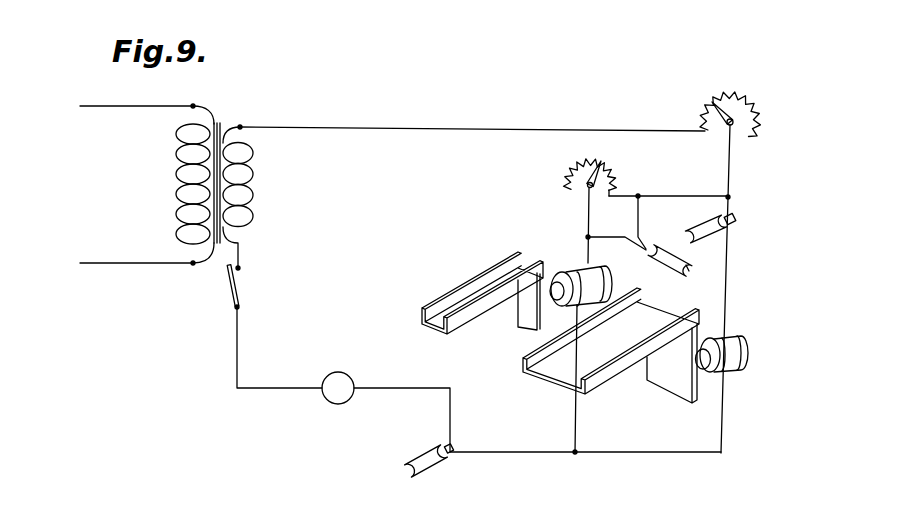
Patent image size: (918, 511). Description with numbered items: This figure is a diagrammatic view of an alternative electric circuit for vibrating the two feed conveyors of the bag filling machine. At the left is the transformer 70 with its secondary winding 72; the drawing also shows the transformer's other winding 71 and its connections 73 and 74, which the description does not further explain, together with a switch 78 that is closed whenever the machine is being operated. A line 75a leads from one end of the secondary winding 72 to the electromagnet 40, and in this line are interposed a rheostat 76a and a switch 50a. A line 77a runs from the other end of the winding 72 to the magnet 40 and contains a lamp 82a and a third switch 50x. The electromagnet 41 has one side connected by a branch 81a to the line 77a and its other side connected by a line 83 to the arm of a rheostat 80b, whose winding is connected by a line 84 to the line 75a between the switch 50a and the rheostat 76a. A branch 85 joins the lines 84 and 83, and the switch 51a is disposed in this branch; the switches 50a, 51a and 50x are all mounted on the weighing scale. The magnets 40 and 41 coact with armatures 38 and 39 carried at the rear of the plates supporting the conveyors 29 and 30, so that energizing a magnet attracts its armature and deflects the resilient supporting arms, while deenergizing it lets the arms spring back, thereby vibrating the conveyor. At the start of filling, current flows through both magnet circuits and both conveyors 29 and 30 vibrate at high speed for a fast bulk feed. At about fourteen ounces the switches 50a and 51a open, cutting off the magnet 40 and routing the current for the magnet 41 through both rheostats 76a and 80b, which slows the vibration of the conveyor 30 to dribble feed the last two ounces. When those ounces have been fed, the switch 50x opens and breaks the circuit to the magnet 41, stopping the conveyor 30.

The transformer 70 is at (254, 95).
The primary winding 71 is at (178, 209).
The secondary winding 72 is at (254, 176).
The supply lead 73 is at (118, 107).
The supply lead 74 is at (106, 266).
The line 75a is at (447, 120).
The rheostat 76a is at (764, 121).
The line 77a is at (292, 377).
The switch 78 is at (242, 290).
The rheostat 80b is at (568, 183).
The branch 81a is at (578, 433).
The lamp 82a is at (352, 379).
The line 83 is at (592, 253).
The line 84 is at (680, 182).
The branch 85 is at (641, 216).
The switch 50a is at (730, 228).
The switch 51a is at (697, 274).
The third switch 50x is at (420, 475).
The conveyor 30 is at (466, 280).
The armature 39 is at (537, 307).
The conveyor 29 is at (554, 376).
The armature 38 is at (697, 362).
The electromagnet 40 is at (739, 351).
The electromagnet 41 is at (578, 262).